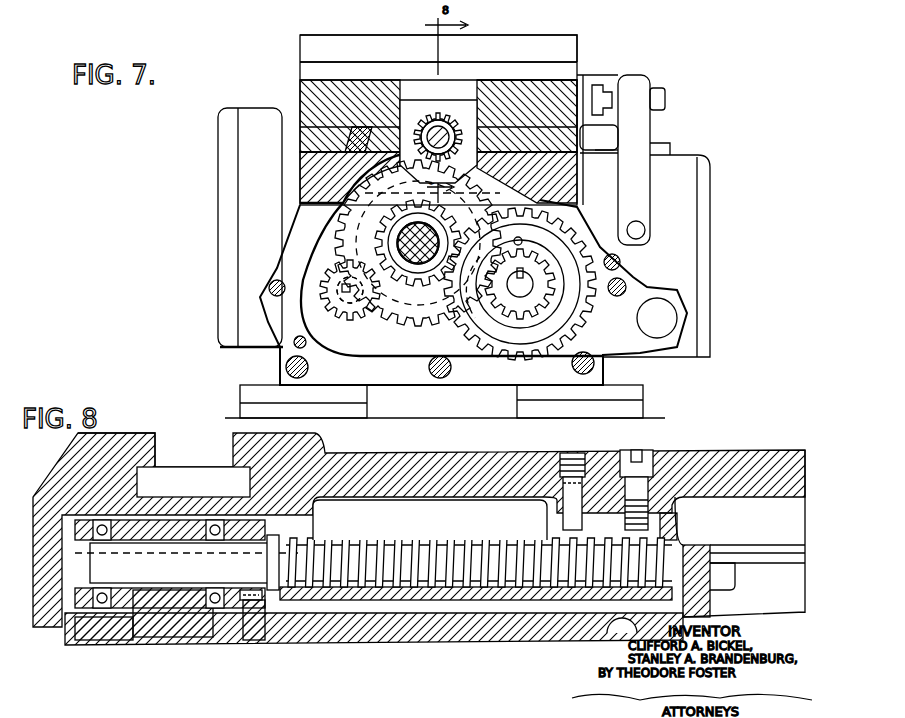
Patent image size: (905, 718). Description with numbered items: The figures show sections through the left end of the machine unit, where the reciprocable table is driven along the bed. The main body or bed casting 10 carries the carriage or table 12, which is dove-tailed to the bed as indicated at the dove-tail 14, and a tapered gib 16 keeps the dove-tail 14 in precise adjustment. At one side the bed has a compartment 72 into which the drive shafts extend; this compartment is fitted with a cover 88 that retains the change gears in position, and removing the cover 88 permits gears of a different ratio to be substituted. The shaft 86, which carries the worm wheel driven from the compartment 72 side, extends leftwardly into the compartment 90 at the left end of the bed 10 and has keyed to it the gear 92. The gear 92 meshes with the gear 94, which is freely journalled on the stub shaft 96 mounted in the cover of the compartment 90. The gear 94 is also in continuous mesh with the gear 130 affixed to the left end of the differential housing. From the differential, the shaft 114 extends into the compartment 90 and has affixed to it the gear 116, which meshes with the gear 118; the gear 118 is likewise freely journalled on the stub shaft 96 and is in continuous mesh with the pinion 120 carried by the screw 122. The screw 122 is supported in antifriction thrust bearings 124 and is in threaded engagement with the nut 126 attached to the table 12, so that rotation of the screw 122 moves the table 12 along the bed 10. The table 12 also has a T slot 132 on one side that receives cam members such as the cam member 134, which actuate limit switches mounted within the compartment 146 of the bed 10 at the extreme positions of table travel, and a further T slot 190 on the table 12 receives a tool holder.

In FIG. 7, the bed casting 10 is at (297, 247).
In FIG. 8, the bed casting 10 is at (417, 633).
In FIG. 7, the table 12 is at (567, 47).
In FIG. 8, the table 12 is at (757, 450).
In FIG. 7, the dove-tail 14 is at (505, 140).
In FIG. 7, the tapered gib 16 is at (300, 78).
In FIG. 7, the compartment 72 is at (250, 108).
In FIG. 7, the shaft 86 is at (343, 295).
In FIG. 7, the cover 88 is at (224, 136).
In FIG. 7, the compartment 90 is at (590, 320).
In FIG. 7, the gear 92 is at (332, 305).
In FIG. 7, the gear 94 is at (400, 318).
In FIG. 7, the stub shaft 96 is at (413, 250).
In FIG. 7, the shaft 114 is at (517, 292).
In FIG. 7, the gear 116 is at (523, 313).
In FIG. 7, the gear 118 is at (427, 305).
In FIG. 8, the gear 118 is at (253, 640).
In FIG. 7, the lock washer 120 is at (467, 125).
In FIG. 8, the lock washer 120 is at (237, 602).
In FIG. 7, the screw 122 is at (430, 123).
In FIG. 8, the screw 122 is at (673, 540).
In FIG. 8, the thrust bearings 124 is at (207, 610).
In FIG. 8, the nut 126 is at (657, 518).
In FIG. 7, the gear 130 is at (462, 350).
In FIG. 7, the T slot 132 is at (603, 93).
In FIG. 7, the cam member 134 is at (643, 128).
In FIG. 7, the compartment 146 is at (700, 214).
In FIG. 7, the T slot 190 is at (315, 67).
In FIG. 8, the T slot 190 is at (155, 450).